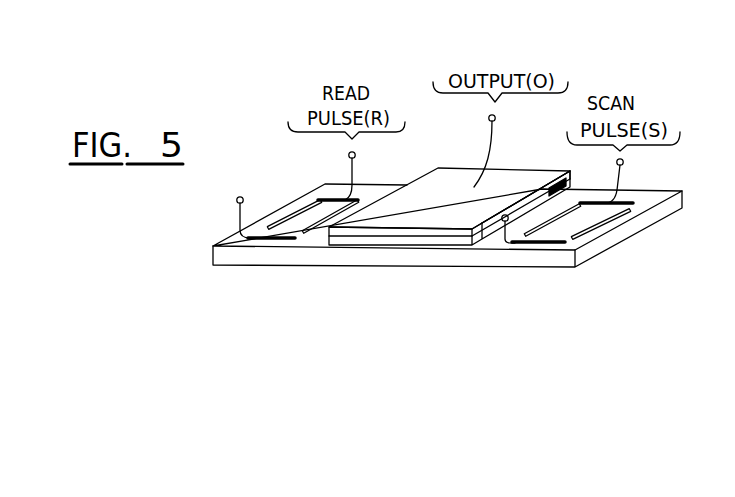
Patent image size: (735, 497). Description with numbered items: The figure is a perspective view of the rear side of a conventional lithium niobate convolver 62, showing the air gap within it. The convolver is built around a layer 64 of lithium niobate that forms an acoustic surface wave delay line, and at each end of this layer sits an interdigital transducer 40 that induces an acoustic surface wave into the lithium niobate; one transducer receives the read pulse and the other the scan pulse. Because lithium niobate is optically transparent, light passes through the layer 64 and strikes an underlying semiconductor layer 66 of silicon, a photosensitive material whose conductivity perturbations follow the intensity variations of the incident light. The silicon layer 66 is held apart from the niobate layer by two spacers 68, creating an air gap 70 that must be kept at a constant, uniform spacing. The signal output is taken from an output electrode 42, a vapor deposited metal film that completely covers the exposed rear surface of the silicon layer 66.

The lithium niobate convolver 62 is at (302, 169).
The layer of lithium niobate 64 is at (466, 256).
The interdigital transducer 40 is at (288, 240).
The output electrode 42 is at (452, 178).
The spacers 68 is at (428, 242).
The semiconductor layer 66 is at (572, 170).
The air gap 70 is at (528, 212).